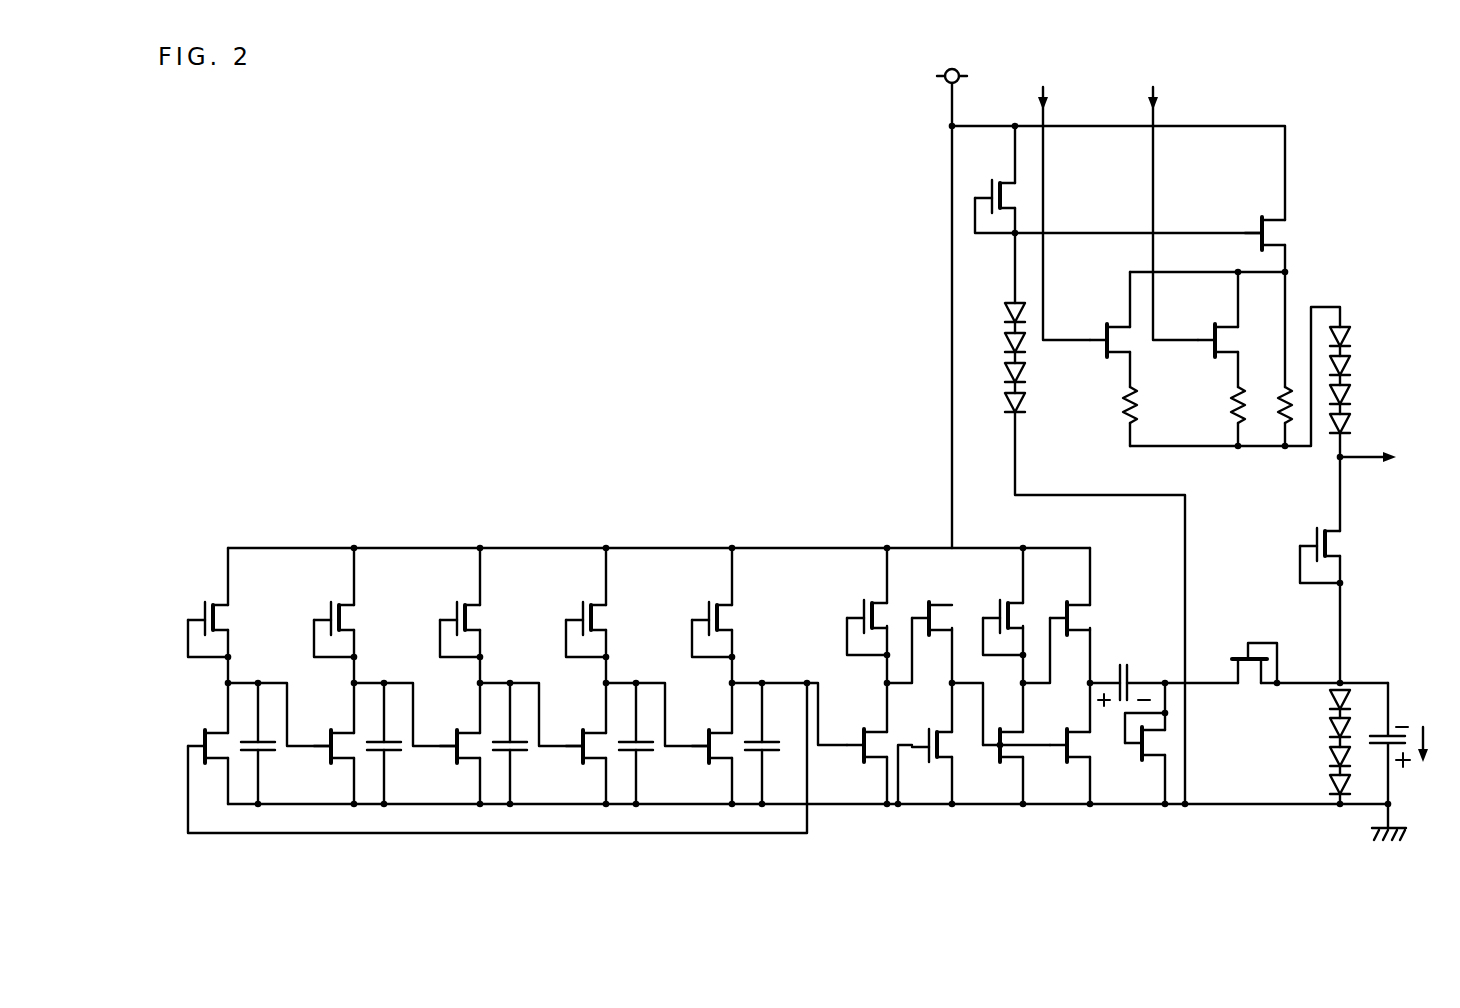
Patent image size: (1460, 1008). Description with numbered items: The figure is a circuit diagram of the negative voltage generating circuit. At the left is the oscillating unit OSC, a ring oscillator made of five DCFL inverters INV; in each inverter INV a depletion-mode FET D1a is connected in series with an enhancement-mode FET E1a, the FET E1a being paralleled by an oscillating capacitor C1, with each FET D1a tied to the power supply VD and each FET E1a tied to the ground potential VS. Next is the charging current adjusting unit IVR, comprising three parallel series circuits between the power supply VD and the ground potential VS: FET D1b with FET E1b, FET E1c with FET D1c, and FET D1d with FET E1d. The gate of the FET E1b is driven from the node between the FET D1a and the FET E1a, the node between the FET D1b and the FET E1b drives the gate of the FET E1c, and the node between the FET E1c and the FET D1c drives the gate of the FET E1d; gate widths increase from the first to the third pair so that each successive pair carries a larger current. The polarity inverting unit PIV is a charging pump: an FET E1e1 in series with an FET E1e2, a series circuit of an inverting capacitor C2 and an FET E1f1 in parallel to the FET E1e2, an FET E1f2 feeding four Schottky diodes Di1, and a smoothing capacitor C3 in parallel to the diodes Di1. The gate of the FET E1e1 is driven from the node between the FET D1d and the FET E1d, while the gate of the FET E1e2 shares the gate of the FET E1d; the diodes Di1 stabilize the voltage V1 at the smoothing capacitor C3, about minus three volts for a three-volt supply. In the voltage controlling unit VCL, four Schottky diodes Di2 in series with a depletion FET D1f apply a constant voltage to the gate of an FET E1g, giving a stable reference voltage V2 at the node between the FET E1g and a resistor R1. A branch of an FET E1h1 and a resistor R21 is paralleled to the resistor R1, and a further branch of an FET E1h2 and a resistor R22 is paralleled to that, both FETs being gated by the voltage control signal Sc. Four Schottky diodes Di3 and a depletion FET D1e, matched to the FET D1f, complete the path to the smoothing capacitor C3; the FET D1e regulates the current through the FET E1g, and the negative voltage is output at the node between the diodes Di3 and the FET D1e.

The oscillating unit OSC is at (810, 542).
The DCFL inverter INV is at (720, 797).
The FET operated in depletion mode D1a is at (750, 631).
The FET operated in enhancement mode E1a is at (700, 724).
The oscillating capacitor C1 is at (779, 777).
The charging current adjusting unit IVR is at (1030, 542).
The FET operated in depletion mode D1b is at (856, 604).
The FET operated in enhancement mode E1b is at (860, 755).
The FET operated in enhancement mode E1c is at (922, 604).
The FET operated in depletion mode D1c is at (926, 755).
The FET operated in depletion mode D1d is at (992, 604).
The FET operated in enhancement mode E1d is at (996, 755).
The FET operated in enhancement mode E1e1 is at (1060, 604).
The FET operated in enhancement mode E1e2 is at (1063, 755).
The polarity inverting unit PIV is at (1372, 810).
The inverting capacitor C2 is at (1125, 657).
The FET operated in enhancement mode E1f1 is at (1140, 760).
The FET operated in enhancement mode E1f2 is at (1235, 656).
The Schottky diodes Di1 is at (1328, 734).
The smoothing capacitor C3 is at (1377, 752).
The voltage V1 is at (1438, 744).
The ground potential Vs is at (1374, 836).
The power supply VD is at (946, 82).
The voltage control signal Sc is at (1114, 199).
The voltage controlling unit VCL is at (945, 126).
The FET operated in depletion mode D1f is at (987, 180).
The Schottky diodes Di2 is at (1028, 370).
The FET operated in enhancement mode E1g is at (1255, 215).
The reference voltage V2 is at (1306, 274).
The FET operated in enhancement mode E1h1 is at (1212, 324).
The FET operated in enhancement mode E1h2 is at (1104, 324).
The resistor R1 is at (1274, 402).
The resistor R21 is at (1230, 413).
The resistor R22 is at (1122, 413).
The Schottky diodes Di3 is at (1352, 357).
The FET operated in depletion mode D1e is at (1311, 524).